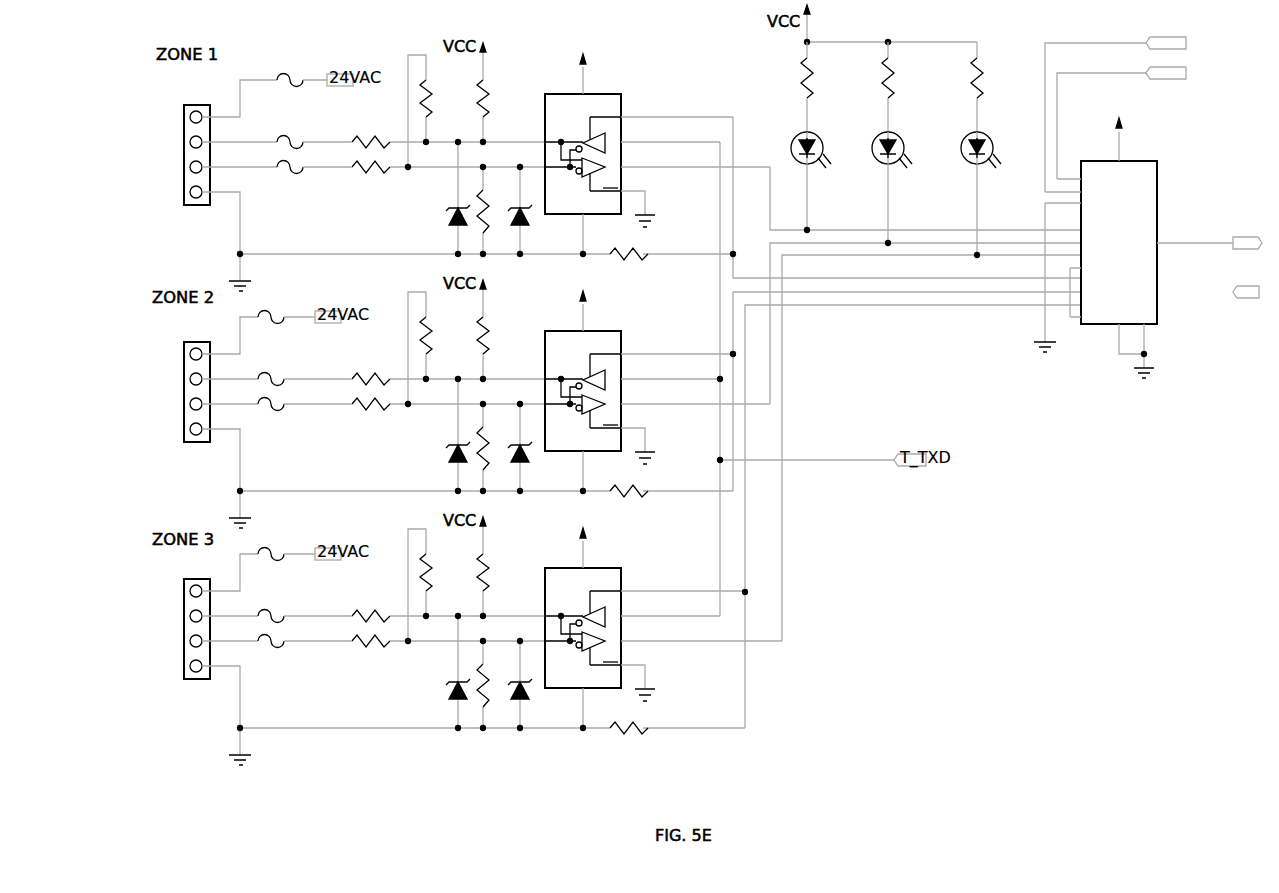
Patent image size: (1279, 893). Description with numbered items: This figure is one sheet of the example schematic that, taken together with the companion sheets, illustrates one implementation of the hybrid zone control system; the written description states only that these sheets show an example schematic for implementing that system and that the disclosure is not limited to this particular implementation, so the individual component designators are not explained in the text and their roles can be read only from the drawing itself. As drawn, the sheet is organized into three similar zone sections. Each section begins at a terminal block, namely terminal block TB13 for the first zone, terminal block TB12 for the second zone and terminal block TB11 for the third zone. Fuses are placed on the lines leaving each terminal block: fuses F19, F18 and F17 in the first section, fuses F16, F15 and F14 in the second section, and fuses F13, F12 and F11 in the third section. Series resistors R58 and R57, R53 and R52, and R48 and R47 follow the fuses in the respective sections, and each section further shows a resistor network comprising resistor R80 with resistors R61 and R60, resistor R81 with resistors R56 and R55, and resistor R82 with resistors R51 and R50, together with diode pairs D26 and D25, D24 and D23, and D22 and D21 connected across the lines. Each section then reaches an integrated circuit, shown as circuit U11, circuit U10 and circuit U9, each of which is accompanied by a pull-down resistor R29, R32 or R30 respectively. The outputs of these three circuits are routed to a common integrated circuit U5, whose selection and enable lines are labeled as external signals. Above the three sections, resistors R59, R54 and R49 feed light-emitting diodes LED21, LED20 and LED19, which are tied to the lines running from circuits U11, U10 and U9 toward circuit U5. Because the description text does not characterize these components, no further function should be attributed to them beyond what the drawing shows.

The zone 1 terminal block TB13 is at (212, 183).
The zone 2 terminal block TB12 is at (203, 420).
The zone 3 terminal block TB11 is at (203, 657).
The fuse 0.14A F19 is at (285, 61).
The fuse 0.14A F18 is at (279, 123).
The fuse 0.14A F17 is at (279, 188).
The fuse 0.14A F16 is at (271, 297).
The fuse 0.14A F15 is at (273, 359).
The fuse 0.14A F14 is at (273, 425).
The fuse 0.14A F13 is at (272, 528).
The fuse 0.14A F12 is at (266, 597).
The fuse 0.14A F11 is at (266, 663).
The resistor 4.7 ohm R58 is at (356, 122).
The resistor 4.7 ohm R57 is at (358, 187).
The resistor 4.7 ohm R53 is at (364, 359).
The resistor 4.7 ohm R52 is at (364, 425).
The resistor 4.7 ohm R48 is at (359, 597).
The resistor 4.7 ohm R47 is at (359, 663).
The resistor 150 R80 is at (437, 112).
The resistor 150 R81 is at (437, 349).
The resistor 150 R82 is at (437, 586).
The resistor 510 R61 is at (506, 94).
The resistor 510 R60 is at (501, 234).
The resistor 510 R56 is at (506, 331).
The resistor 510 R55 is at (501, 471).
The resistor 510 R51 is at (506, 568).
The resistor 510 R50 is at (507, 707).
The resistor 10K R29 is at (615, 267).
The resistor 10K R32 is at (615, 504).
The resistor 10K R30 is at (615, 741).
The resistor 470 R59 is at (827, 87).
The resistor 470 R54 is at (908, 87).
The resistor 470 R49 is at (997, 87).
The TVS diode SMBJ7.0A D26 is at (415, 198).
The TVS diode D25 is at (542, 211).
The TVS diode SMBJ7.0A D24 is at (415, 435).
The TVS diode D23 is at (541, 448).
The TVS diode SMBJ7.0A D22 is at (415, 672).
The TVS diode D21 is at (542, 685).
The RS-485 transceiver 65HVD3082 U11 is at (651, 153).
The RS-485 transceiver 65HVD3082 U10 is at (651, 390).
The RS-485 transceiver 65HVD3082 U9 is at (657, 627).
The analog multiplexer 4052_SMT U5 is at (1156, 206).
The LED LED21 is at (827, 172).
The LED LED20 is at (911, 179).
The LED LED19 is at (1000, 185).